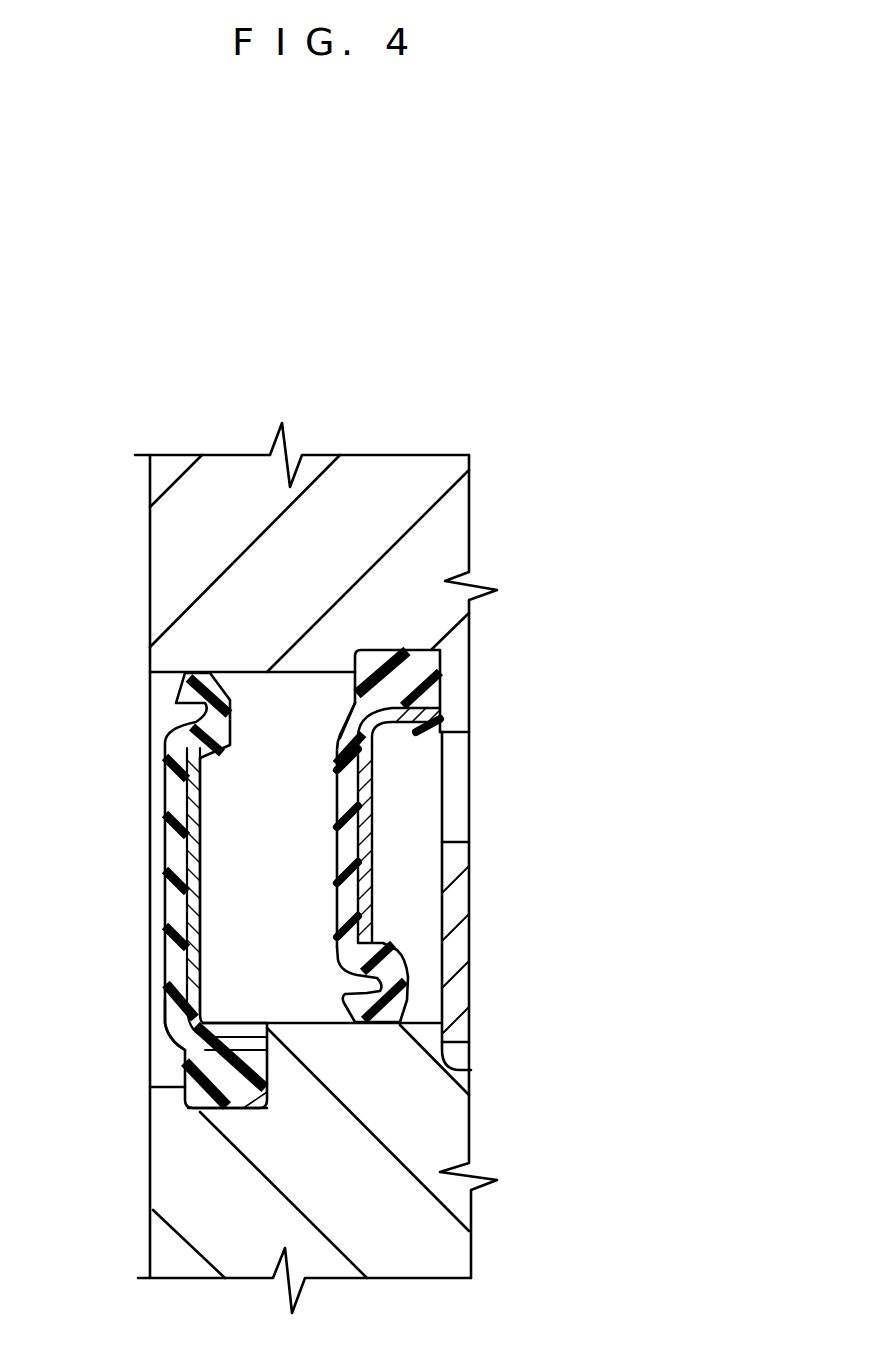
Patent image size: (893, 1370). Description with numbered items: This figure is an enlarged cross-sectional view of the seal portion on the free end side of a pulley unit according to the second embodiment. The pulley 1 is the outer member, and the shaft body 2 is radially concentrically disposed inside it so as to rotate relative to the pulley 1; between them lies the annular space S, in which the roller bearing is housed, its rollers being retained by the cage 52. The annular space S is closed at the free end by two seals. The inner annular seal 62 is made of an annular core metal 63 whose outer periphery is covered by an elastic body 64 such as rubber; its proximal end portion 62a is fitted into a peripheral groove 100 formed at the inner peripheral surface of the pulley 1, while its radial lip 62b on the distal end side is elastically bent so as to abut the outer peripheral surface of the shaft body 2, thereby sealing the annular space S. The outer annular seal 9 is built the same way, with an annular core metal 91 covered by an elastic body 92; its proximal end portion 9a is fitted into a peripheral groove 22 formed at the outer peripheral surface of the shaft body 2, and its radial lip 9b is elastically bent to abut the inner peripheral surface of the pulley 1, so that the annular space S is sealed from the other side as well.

The pulley 1 is at (388, 478).
The shaft body 2 is at (445, 1132).
The annular space S is at (290, 713).
The outer annular seal 9 is at (165, 832).
The proximal end portion 9a is at (212, 1063).
The radial lip 9b is at (178, 690).
The annular core metal 91 is at (200, 937).
The elastic body 92 is at (170, 1008).
The peripheral groove 22 is at (240, 1112).
The cage 52 is at (463, 898).
The inner annular seal 62 is at (428, 662).
The proximal end portion 62a is at (373, 660).
The radial lip 62b is at (407, 993).
The annular core metal 63 is at (373, 812).
The elastic body 64 is at (410, 682).
The peripheral groove 100 is at (413, 648).